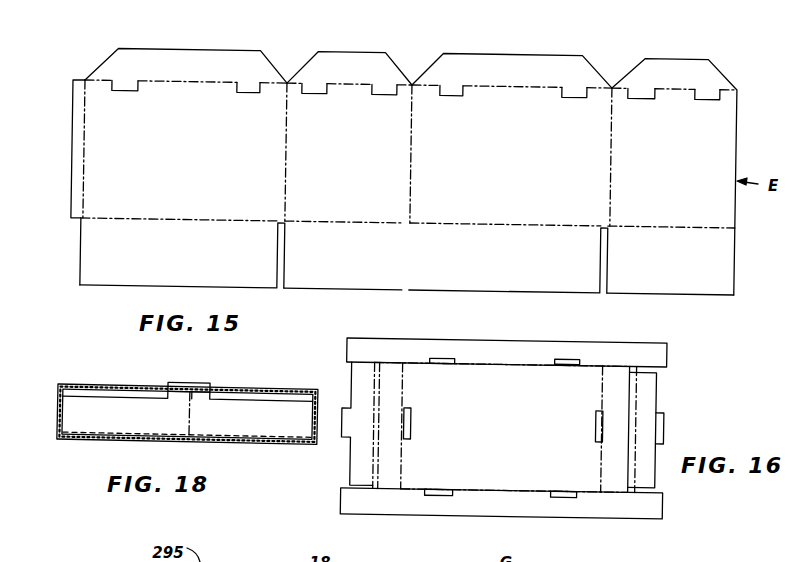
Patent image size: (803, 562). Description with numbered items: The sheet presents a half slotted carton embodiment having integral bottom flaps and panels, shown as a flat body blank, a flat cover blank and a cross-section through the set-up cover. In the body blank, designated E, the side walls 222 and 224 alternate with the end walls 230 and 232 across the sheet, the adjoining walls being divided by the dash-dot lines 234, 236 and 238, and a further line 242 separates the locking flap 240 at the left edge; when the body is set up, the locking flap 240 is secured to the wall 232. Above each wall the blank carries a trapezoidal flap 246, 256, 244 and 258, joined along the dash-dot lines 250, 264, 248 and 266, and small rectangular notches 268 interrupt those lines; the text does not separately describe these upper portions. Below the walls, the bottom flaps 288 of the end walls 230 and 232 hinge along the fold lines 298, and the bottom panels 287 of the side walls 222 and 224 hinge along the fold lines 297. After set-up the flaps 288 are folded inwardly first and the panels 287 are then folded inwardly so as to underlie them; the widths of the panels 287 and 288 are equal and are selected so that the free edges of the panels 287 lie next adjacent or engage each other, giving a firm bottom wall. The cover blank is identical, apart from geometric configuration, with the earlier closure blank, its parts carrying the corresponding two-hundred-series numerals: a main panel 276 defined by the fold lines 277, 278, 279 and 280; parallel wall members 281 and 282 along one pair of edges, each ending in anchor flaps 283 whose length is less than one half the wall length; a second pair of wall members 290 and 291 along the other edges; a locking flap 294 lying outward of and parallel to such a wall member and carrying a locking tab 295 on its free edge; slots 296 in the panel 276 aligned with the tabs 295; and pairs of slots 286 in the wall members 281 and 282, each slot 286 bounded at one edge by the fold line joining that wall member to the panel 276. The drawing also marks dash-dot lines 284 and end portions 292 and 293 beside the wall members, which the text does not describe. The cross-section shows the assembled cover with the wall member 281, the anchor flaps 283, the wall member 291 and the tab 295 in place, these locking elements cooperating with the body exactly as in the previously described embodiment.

In FIG. 15, the side wall 222 is at (497, 179).
In FIG. 15, the side wall 224 is at (165, 178).
In FIG. 15, the end wall 230 is at (331, 180).
In FIG. 15, the end wall 232 is at (652, 178).
In FIG. 15, the fold line 234 is at (414, 145).
In FIG. 15, the fold line 236 is at (289, 145).
In FIG. 15, the fold line 238 is at (613, 149).
In FIG. 15, the locking flap 240 is at (73, 144).
In FIG. 15, the fold line 242 is at (87, 144).
In FIG. 15, the top flap 244 is at (497, 50).
In FIG. 15, the top flap 246 is at (185, 48).
In FIG. 15, the fold line 248 is at (500, 80).
In FIG. 15, the fold line 250 is at (168, 80).
In FIG. 15, the top flap 256 is at (340, 50).
In FIG. 15, the top flap 258 is at (665, 52).
In FIG. 15, the fold line 264 is at (345, 80).
In FIG. 15, the fold line 266 is at (668, 80).
In FIG. 15, the notch 268 is at (120, 90).
In FIG. 16, the main panel 276 is at (475, 436).
In FIG. 18, the main panel 276 is at (102, 386).
In FIG. 16, the fold line 277 is at (520, 488).
In FIG. 16, the fold line 278 is at (482, 363).
In FIG. 16, the fold line 279 is at (603, 393).
In FIG. 16, the fold line 280 is at (405, 465).
In FIG. 16, the wall member 281 is at (540, 514).
In FIG. 18, the wall member 281 is at (325, 393).
In FIG. 16, the wall member 282 is at (483, 338).
In FIG. 18, the wall member 282 is at (58, 412).
In FIG. 16, the anchor flap 283 is at (365, 338).
In FIG. 18, the anchor flap 283 is at (134, 432).
In FIG. 16, the fold line 284 is at (407, 362).
In FIG. 16, the slot 286 is at (447, 363).
In FIG. 15, the bottom panel 287 is at (161, 259).
In FIG. 15, the bottom flap 288 is at (327, 259).
In FIG. 16, the wall member 290 is at (612, 452).
In FIG. 16, the wall member 291 is at (411, 410).
In FIG. 18, the wall member 291 is at (231, 421).
In FIG. 16, the end panel 292 is at (382, 393).
In FIG. 16, the end flap 293 is at (352, 465).
In FIG. 16, the locking flap 294 is at (658, 397).
In FIG. 16, the locking tab 295 is at (667, 428).
In FIG. 18, the locking tab 295 is at (190, 381).
In FIG. 16, the slot 296 is at (597, 432).
In FIG. 15, the fold line 297 is at (187, 218).
In FIG. 15, the fold line 298 is at (326, 218).